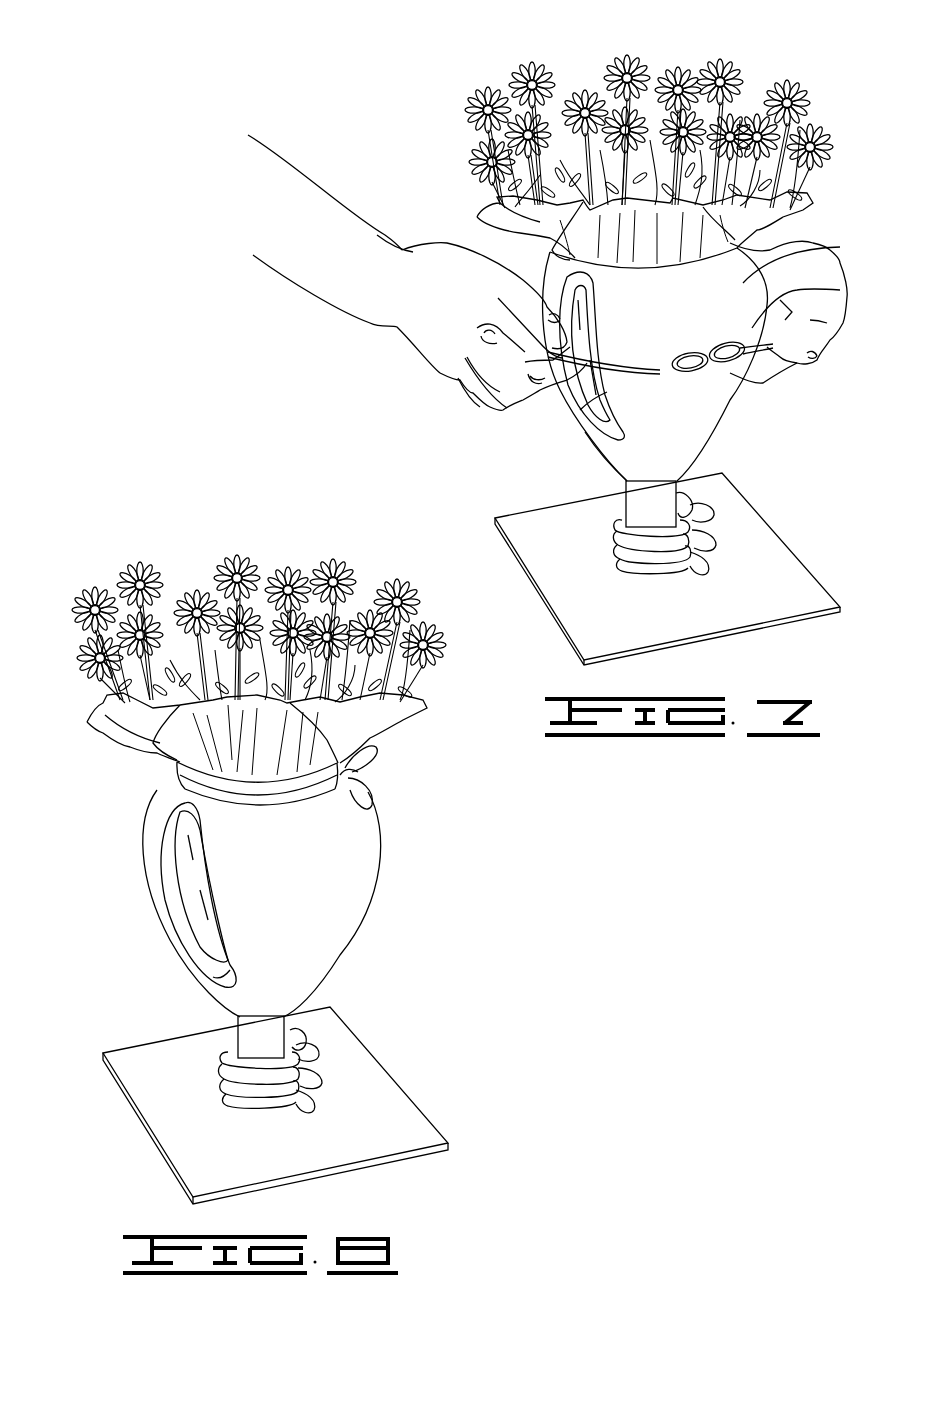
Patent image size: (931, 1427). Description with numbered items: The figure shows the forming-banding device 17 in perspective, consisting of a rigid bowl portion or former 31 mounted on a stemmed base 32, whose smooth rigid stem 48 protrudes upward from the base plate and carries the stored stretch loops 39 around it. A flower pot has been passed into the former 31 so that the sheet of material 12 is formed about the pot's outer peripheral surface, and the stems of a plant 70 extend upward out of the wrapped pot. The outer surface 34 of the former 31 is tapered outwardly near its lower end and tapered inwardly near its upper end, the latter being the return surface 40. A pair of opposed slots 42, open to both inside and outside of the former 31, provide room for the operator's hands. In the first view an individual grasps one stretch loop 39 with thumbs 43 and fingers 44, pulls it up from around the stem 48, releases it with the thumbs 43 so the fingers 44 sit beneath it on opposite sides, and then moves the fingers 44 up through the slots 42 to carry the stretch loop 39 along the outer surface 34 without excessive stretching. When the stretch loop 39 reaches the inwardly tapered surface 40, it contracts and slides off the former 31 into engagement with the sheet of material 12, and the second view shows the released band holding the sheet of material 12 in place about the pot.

In FIG. 7, the sheet of material 12 is at (490, 215).
In FIG. 8, the sheet of material 12 is at (405, 715).
In FIG. 7, the forming-banding device 17 is at (496, 510).
In FIG. 8, the forming-banding device 17 is at (105, 1050).
In FIG. 7, the former 31 is at (710, 430).
In FIG. 8, the former 31 is at (325, 958).
In FIG. 7, the stemmed base 32 is at (790, 580).
In FIG. 8, the stemmed base 32 is at (405, 1125).
In FIG. 7, the outer surface 34 is at (750, 330).
In FIG. 8, the outer surface 34 is at (356, 895).
In FIG. 7, the stretch loop 39 is at (737, 393).
In FIG. 8, the stretch loop 39 is at (180, 780).
In FIG. 7, the inwardly tapered surface 40 is at (743, 282).
In FIG. 8, the inwardly tapered surface 40 is at (357, 838).
In FIG. 7, the slots 42 is at (600, 440).
In FIG. 8, the slots 42 is at (178, 900).
In FIG. 7, the thumbs 43 is at (530, 408).
In FIG. 7, the fingers 44 is at (577, 418).
In FIG. 7, the stem 48 is at (630, 508).
In FIG. 8, the stem 48 is at (243, 1030).
In FIG. 7, the plant 70 is at (525, 64).
In FIG. 8, the plant 70 is at (240, 560).